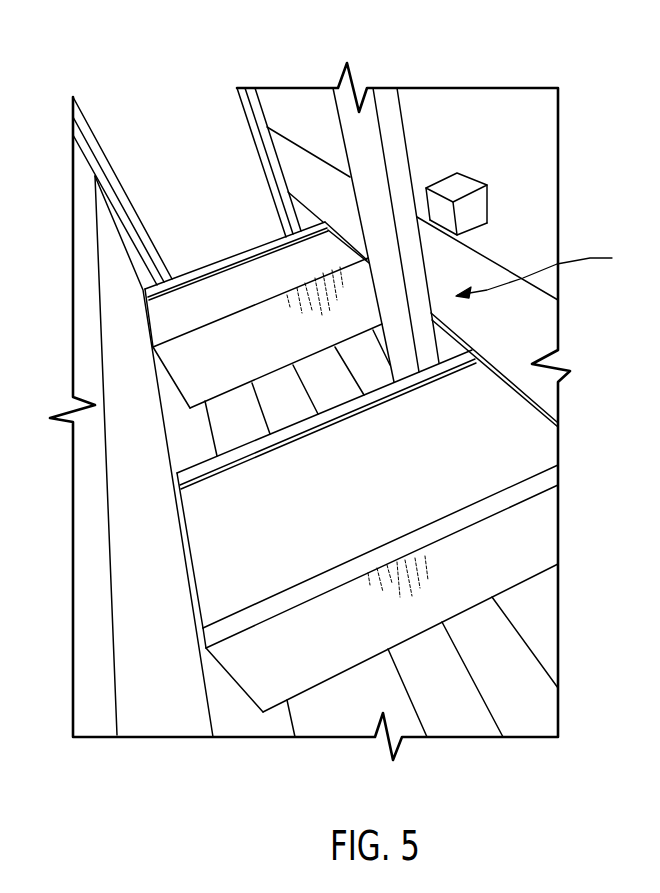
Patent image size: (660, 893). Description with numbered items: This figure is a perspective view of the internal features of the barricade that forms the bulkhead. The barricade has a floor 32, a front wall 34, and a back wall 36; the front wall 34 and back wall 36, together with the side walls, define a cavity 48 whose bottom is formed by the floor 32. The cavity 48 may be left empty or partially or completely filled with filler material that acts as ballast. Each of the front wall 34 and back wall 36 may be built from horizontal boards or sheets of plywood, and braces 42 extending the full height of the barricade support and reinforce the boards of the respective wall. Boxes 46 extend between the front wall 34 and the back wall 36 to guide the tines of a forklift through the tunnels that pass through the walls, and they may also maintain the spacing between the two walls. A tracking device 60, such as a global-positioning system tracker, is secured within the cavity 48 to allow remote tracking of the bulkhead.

The floor 32 is at (430, 533).
The front wall 34 is at (528, 239).
The back wall 36 is at (154, 440).
The braces 42 is at (355, 228).
The boxes 46 is at (395, 373).
The cavity 48 is at (547, 271).
The tracking device 60 is at (529, 177).